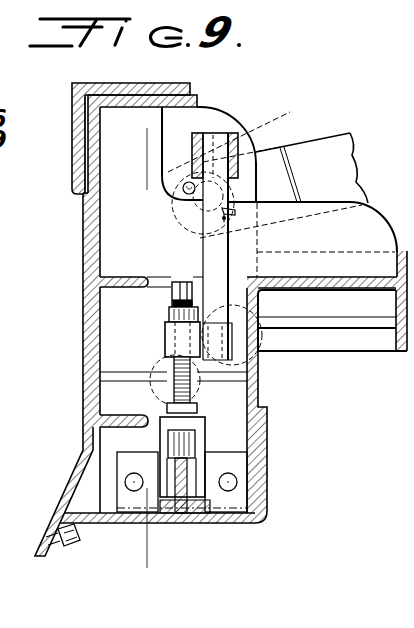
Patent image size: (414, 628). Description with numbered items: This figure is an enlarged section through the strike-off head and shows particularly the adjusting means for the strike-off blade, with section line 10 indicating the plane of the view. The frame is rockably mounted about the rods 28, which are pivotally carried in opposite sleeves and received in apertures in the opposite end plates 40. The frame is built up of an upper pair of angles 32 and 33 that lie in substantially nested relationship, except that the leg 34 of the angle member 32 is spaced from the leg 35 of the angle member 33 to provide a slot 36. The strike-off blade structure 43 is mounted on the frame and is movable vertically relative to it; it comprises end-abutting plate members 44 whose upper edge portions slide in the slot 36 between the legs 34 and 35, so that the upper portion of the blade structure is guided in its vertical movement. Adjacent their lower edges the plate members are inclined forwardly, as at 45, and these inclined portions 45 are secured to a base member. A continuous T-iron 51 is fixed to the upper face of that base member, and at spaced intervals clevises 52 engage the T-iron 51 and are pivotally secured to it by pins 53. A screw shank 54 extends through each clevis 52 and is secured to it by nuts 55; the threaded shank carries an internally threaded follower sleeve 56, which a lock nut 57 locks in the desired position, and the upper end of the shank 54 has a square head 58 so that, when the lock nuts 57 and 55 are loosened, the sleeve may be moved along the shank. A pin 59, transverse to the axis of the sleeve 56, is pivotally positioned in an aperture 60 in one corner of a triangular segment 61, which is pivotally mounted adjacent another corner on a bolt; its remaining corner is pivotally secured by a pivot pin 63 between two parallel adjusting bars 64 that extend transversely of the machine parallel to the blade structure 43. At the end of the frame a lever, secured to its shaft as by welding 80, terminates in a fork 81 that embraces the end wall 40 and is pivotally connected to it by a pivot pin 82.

The section line 10 is at (182, 150).
The rod 28 is at (150, 384).
The angle member 32 is at (128, 100).
The angle member 33 is at (142, 115).
The leg 34 is at (86, 150).
The leg 35 is at (100, 158).
The slot 36 is at (86, 132).
The end plate 40 is at (214, 110).
The strike-off blade structure 43 is at (84, 252).
The plate member 44 is at (84, 311).
The inclined portion 45 is at (64, 498).
The T-iron 51 is at (176, 510).
The clevis 52 is at (200, 432).
The pin 53 is at (196, 466).
The screw shank 54 is at (190, 386).
The nut 55 is at (197, 408).
The follower sleeve 56 is at (165, 338).
The lock nut 57 is at (169, 315).
The square head 58 is at (166, 283).
The pin 59 is at (259, 302).
The aperture 60 is at (258, 373).
The triangular segment 61 is at (230, 258).
The pivot pin 63 is at (213, 143).
The adjusting bar 64 is at (190, 142).
The welding 80 is at (78, 150).
The fork 81 is at (290, 140).
The pivot pin 82 is at (174, 216).